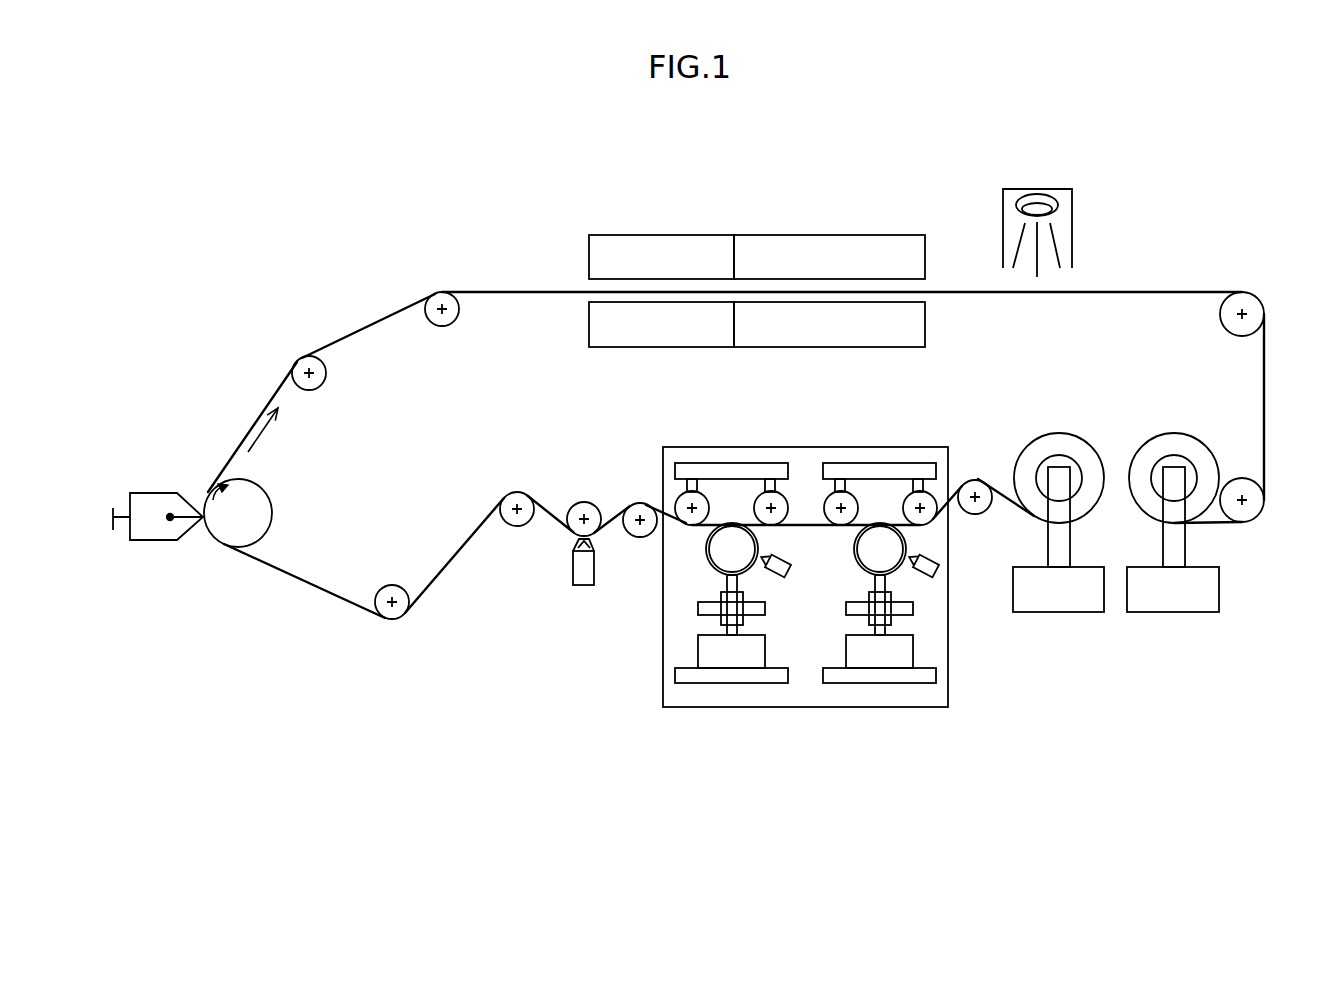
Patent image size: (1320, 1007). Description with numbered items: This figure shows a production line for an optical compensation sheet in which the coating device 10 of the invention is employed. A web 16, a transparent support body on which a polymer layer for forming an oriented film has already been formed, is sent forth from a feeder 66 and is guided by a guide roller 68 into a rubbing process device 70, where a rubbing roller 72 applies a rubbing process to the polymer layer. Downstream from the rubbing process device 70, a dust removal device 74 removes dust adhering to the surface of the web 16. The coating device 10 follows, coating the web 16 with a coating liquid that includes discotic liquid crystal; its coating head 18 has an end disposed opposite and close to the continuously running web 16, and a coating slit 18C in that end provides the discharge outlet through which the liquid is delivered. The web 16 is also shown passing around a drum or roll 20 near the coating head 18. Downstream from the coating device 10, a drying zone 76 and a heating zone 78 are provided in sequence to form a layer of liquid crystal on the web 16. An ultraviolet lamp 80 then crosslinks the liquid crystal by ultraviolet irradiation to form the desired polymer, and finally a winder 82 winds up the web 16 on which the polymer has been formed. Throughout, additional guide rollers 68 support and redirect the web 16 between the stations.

The coating device 10 is at (235, 424).
The web 16 is at (292, 578).
The coating head 18 is at (150, 493).
The coating slit 18C is at (181, 523).
The casting drum 20 is at (263, 527).
The feeder 66 is at (1060, 612).
The guide roller 68 is at (435, 327).
The rubbing process device 70 is at (870, 717).
The rubbing roller 72 is at (707, 552).
The dust removal device 74 is at (577, 568).
The drying zone 76 is at (663, 245).
The heating zone 78 is at (827, 245).
The ultraviolet lamp 80 is at (1072, 222).
The winder 82 is at (1175, 612).